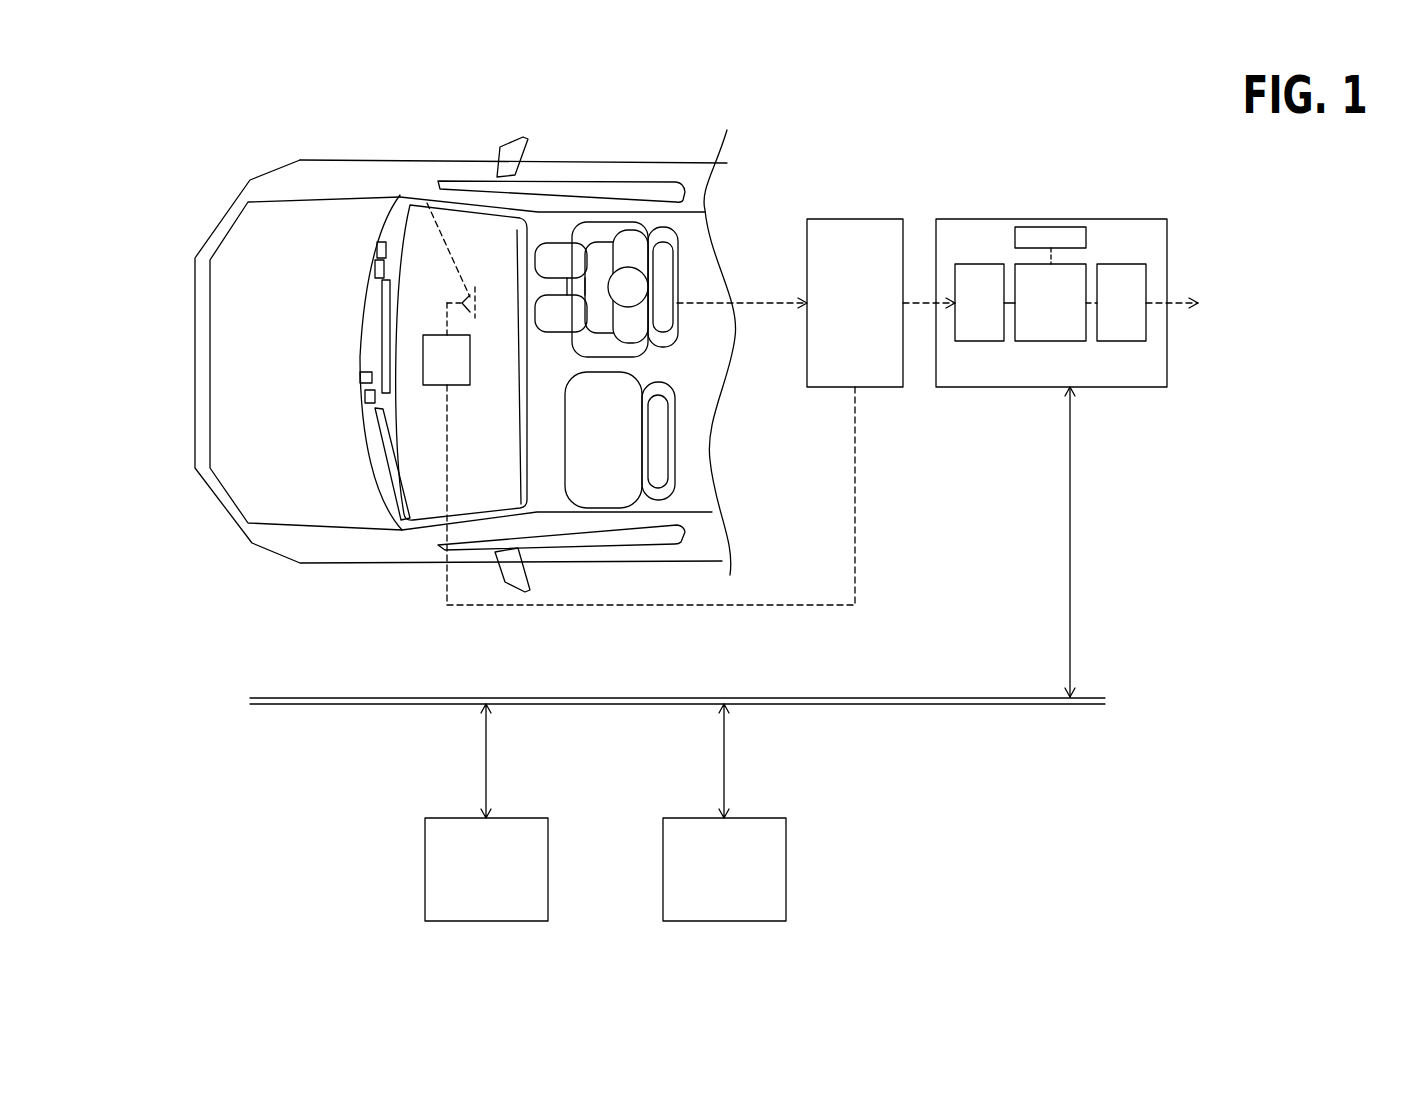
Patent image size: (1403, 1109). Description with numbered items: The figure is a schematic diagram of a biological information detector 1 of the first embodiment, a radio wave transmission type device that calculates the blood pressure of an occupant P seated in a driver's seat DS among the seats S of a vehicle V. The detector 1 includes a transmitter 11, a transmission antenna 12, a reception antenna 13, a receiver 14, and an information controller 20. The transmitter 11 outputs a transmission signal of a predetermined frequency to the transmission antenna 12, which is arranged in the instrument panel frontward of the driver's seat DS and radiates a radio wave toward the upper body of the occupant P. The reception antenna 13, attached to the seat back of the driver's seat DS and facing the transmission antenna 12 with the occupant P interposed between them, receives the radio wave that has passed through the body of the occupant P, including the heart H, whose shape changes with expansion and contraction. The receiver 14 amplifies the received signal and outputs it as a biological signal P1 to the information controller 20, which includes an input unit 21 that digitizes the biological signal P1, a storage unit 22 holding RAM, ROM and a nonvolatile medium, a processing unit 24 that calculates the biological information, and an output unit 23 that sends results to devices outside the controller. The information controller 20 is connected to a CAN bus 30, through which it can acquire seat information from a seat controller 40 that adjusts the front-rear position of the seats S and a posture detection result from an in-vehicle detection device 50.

The biological information detector 1 is at (724, 531).
The vehicle V is at (296, 140).
The transmitter 11 is at (423, 348).
The transmission antenna 12 is at (423, 197).
The reception antenna 13 is at (658, 303).
The receiver 14 is at (851, 219).
The information controller 20 is at (1066, 295).
The input unit 21 is at (965, 341).
The storage unit 22 is at (1042, 227).
The output unit 23 is at (1126, 341).
The processing unit 24 is at (1050, 341).
The CAN bus 30 is at (972, 704).
The seat controller 40 is at (488, 922).
The in-vehicle detection device 50 is at (726, 922).
The heart H is at (630, 297).
The occupant P is at (600, 240).
The biological signal P1 is at (918, 300).
The seats S is at (643, 232).
The driver's seat DS is at (684, 213).